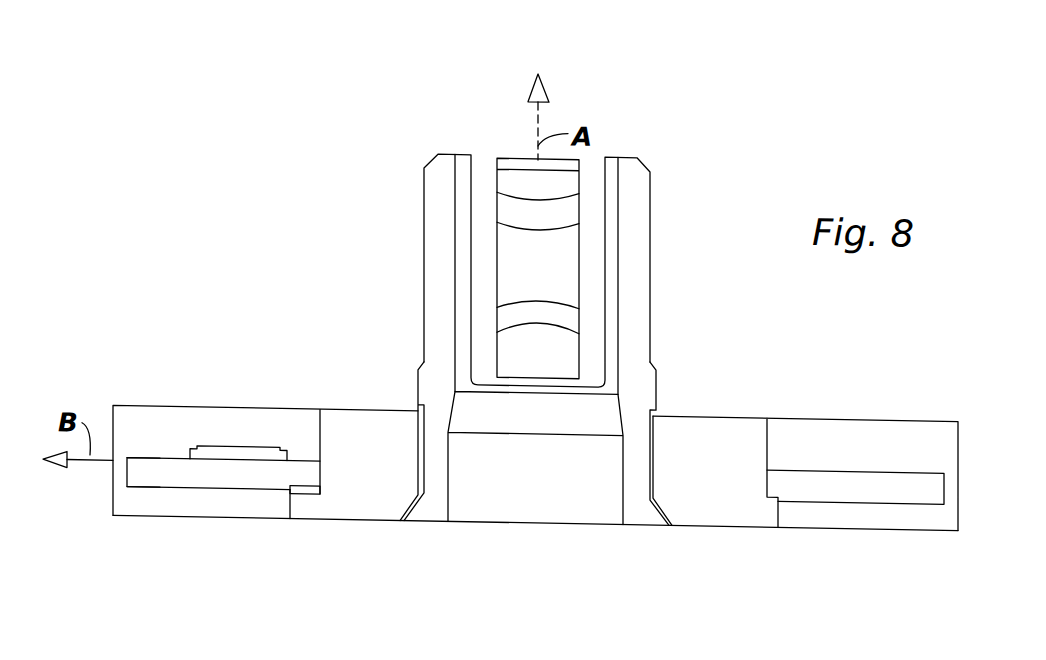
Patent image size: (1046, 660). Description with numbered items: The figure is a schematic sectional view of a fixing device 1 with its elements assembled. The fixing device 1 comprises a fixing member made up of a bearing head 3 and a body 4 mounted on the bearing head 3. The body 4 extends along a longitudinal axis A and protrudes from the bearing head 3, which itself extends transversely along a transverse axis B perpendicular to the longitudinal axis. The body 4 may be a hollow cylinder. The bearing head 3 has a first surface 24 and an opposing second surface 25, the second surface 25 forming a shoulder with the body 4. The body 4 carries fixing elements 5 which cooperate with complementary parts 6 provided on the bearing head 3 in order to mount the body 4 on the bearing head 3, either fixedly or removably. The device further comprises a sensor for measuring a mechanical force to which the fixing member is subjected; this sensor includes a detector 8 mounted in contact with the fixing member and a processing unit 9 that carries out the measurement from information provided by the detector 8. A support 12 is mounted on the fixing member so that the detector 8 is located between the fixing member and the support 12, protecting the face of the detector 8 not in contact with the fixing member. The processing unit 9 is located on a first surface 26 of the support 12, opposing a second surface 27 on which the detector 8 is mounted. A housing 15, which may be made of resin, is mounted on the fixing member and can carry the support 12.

The fixing device 1 is at (712, 190).
The bearing head 3 is at (353, 433).
The body 4 is at (636, 262).
The fixing elements 5 is at (650, 516).
The complementary parts 6 is at (658, 505).
The detector 8 is at (303, 491).
The processing unit 9 is at (222, 458).
The support 12 is at (888, 482).
The housing 15 is at (840, 437).
The first surface 24 is at (357, 523).
The second surface 25 is at (398, 411).
The first surface 26 is at (150, 464).
The second surface 27 is at (187, 498).